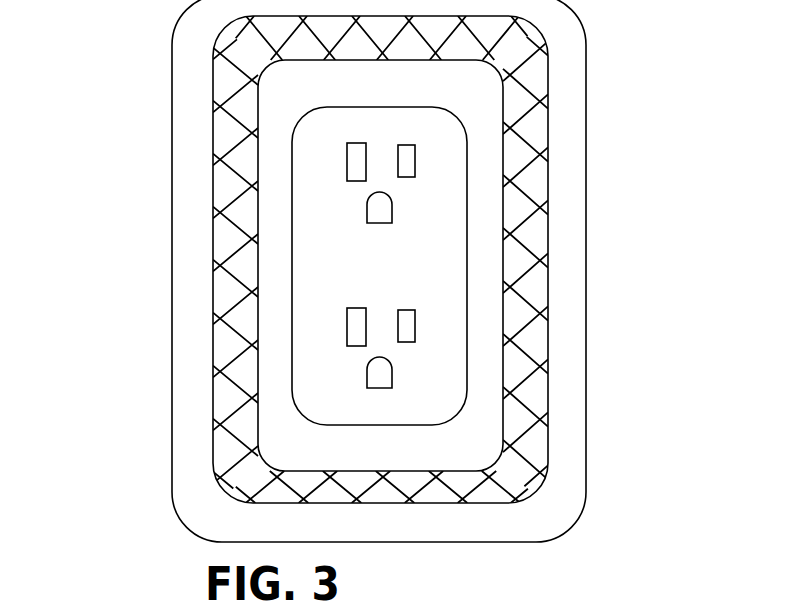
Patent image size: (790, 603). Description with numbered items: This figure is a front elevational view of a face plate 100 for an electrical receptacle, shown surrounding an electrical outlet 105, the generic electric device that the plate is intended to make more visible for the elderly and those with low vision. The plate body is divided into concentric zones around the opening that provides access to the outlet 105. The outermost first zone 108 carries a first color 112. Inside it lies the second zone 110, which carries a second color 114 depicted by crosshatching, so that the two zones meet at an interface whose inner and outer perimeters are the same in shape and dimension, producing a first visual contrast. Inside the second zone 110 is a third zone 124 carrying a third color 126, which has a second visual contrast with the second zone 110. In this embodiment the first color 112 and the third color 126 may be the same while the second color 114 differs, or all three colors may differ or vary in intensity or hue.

The face plate 100 is at (630, 84).
The electrical outlet 105 is at (450, 293).
The first zone 108 is at (318, 271).
The first color 112 is at (192, 129).
The second zone 110 is at (305, 259).
The second color 114 is at (217, 210).
The third zone 124 is at (277, 265).
The third color 126 is at (273, 404).